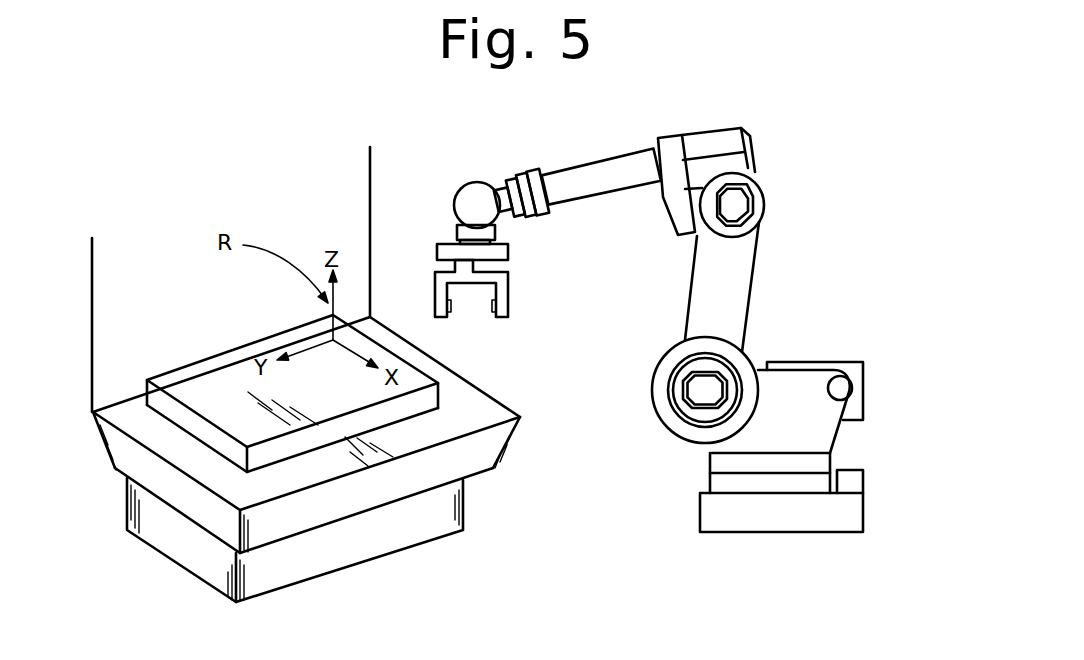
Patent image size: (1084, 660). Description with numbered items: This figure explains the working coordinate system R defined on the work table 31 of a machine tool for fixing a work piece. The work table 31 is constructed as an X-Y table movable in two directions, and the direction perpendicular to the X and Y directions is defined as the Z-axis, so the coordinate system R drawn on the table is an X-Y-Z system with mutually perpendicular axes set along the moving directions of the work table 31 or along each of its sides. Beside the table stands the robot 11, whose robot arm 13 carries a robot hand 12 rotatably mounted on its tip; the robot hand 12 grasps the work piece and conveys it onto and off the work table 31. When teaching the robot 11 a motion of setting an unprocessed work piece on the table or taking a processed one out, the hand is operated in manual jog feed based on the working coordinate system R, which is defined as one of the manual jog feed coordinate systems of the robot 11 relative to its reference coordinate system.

The robot 11 is at (682, 305).
The robot hand 12 is at (503, 292).
The robot arm 13 is at (611, 175).
The work table 31 is at (210, 375).